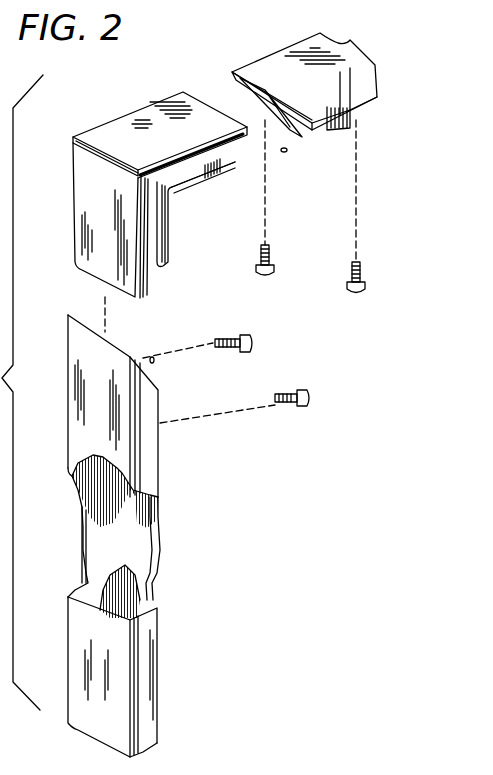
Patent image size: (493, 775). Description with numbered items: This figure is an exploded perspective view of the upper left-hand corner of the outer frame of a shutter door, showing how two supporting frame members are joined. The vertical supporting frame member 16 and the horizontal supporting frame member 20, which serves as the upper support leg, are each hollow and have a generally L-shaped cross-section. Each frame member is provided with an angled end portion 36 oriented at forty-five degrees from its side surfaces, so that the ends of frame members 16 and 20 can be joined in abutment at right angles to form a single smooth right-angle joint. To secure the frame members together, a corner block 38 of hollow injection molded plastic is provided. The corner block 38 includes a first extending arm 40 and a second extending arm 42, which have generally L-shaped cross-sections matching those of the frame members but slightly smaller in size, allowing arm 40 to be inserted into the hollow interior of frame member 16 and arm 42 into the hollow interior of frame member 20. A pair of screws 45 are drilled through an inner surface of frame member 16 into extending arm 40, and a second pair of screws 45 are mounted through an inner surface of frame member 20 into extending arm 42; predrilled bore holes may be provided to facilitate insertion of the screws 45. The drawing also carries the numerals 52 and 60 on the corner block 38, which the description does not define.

The supporting frame member 16 is at (152, 427).
The supporting frame member 20 is at (326, 112).
The angled end portion 36 is at (285, 152).
The corner block 38 is at (138, 185).
The first extending arm 40 is at (170, 247).
The second extending arm 42 is at (197, 188).
The screws 45 is at (350, 275).
The side leg 52 is at (100, 252).
The top wall 60 is at (190, 118).